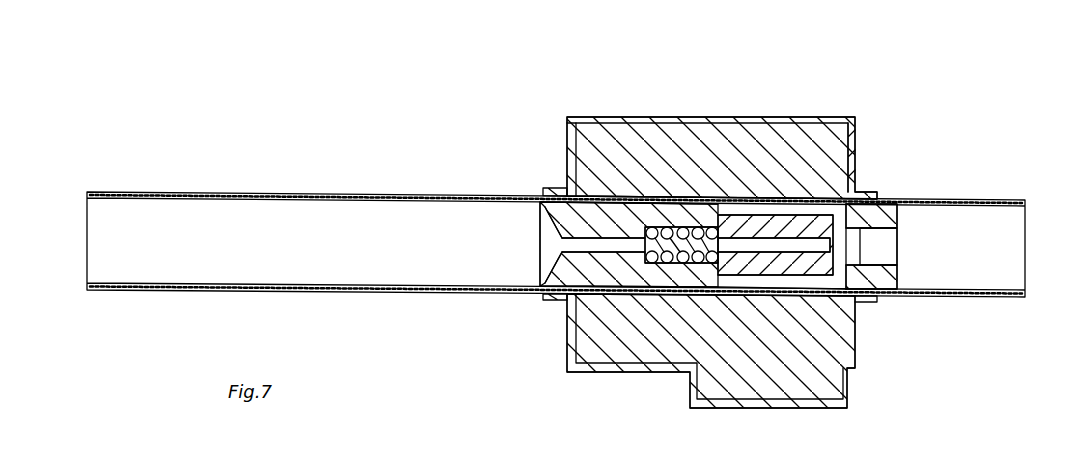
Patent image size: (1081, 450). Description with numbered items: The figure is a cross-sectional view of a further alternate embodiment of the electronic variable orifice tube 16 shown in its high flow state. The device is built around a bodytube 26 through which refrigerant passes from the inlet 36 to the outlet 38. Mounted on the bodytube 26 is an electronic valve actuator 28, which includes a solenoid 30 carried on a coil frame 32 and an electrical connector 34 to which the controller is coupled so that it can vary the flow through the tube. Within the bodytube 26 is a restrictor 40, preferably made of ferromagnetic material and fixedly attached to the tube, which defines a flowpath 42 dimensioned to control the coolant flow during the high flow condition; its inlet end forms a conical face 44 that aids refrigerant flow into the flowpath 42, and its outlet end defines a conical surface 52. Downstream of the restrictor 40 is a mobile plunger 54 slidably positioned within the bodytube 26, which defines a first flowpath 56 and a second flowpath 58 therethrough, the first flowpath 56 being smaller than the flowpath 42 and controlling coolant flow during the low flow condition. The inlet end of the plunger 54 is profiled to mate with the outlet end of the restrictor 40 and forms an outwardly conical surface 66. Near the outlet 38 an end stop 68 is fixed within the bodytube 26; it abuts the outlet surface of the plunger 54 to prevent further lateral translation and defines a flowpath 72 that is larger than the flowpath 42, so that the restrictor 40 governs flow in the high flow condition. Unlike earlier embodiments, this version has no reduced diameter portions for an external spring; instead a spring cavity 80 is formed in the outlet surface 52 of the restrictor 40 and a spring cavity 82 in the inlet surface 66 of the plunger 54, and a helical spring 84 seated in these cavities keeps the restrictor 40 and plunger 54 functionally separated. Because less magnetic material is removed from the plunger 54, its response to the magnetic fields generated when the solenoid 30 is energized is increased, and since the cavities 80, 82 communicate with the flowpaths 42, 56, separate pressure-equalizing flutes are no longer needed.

The electronic variable orifice tube 16 is at (945, 90).
The bodytube 26 is at (157, 192).
The electronic valve actuator 28 is at (735, 118).
The solenoid 30 is at (635, 137).
The coil frame 32 is at (567, 137).
The electrical connector 34 is at (823, 412).
The inlet 36 is at (62, 253).
The outlet 38 is at (1048, 221).
The restrictor 40 is at (563, 260).
The flowpath 42 is at (562, 188).
The conical face 44 is at (548, 232).
The conical surface 52 is at (663, 258).
The mobile plunger 54 is at (802, 266).
The first flowpath 56 is at (817, 243).
The second flowpath 58 is at (805, 210).
The outwardly conical surface 66 is at (705, 281).
The end stop 68 is at (887, 213).
The flowpath 72 is at (890, 245).
The spring cavity 80 is at (662, 245).
The spring cavity 82 is at (705, 227).
The helical spring 84 is at (622, 363).